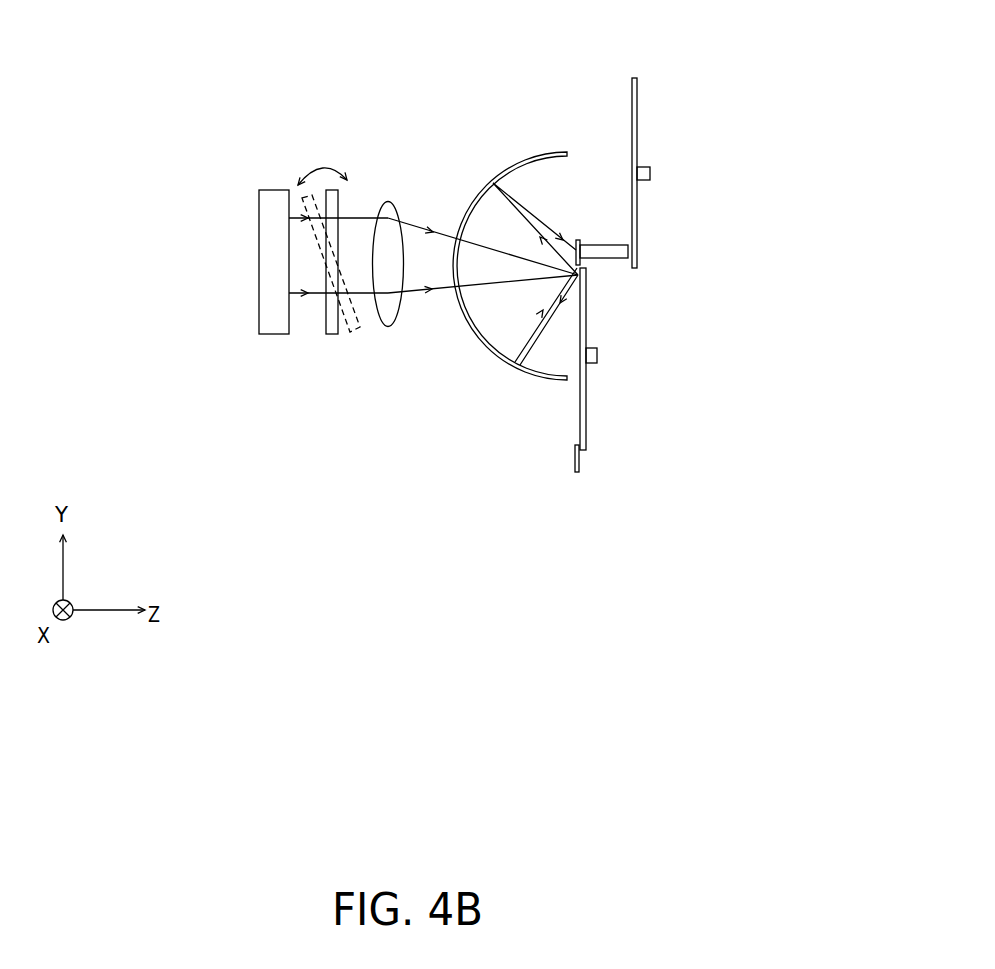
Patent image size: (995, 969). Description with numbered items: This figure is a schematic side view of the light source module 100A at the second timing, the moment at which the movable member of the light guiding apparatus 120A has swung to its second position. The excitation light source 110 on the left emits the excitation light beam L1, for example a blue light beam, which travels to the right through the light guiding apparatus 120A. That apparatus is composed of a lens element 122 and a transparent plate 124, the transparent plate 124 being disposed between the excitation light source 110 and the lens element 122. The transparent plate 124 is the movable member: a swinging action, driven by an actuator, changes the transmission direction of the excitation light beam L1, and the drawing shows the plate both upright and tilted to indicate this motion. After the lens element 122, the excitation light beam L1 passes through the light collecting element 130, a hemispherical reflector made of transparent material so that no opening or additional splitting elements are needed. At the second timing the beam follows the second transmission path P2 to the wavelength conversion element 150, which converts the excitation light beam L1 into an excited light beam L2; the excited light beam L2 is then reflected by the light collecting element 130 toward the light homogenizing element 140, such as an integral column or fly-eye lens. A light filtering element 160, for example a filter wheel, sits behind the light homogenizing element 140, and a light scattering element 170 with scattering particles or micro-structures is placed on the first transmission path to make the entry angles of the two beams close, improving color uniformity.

The excitation light source 110 is at (258, 273).
The light guiding apparatus 120A is at (351, 342).
The lens element 122 is at (388, 327).
The transparent plate 124 is at (325, 335).
The light collecting element 130 is at (500, 177).
The light homogenizing element 140 is at (606, 243).
The wavelength conversion element 150 is at (586, 408).
The light filtering element 160 is at (638, 77).
The light scattering element 170 is at (577, 472).
The excitation light beam L1 is at (300, 293).
The excited light beam L2 is at (548, 318).
The second transmission path P2 is at (490, 282).
The light source module 100A is at (782, 585).